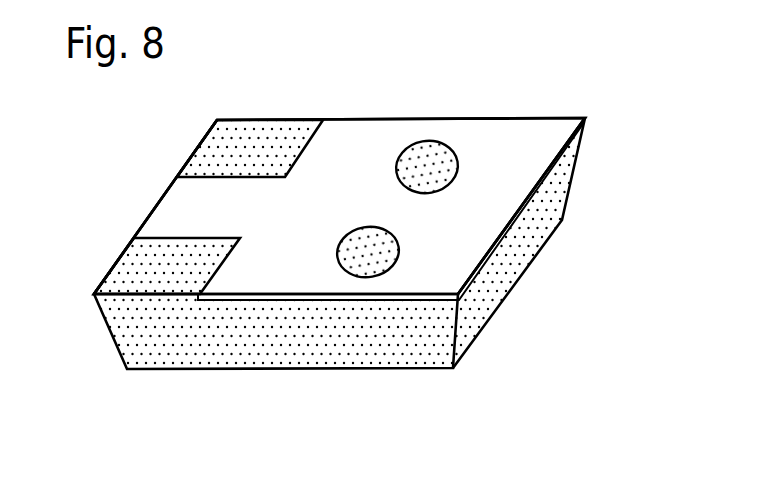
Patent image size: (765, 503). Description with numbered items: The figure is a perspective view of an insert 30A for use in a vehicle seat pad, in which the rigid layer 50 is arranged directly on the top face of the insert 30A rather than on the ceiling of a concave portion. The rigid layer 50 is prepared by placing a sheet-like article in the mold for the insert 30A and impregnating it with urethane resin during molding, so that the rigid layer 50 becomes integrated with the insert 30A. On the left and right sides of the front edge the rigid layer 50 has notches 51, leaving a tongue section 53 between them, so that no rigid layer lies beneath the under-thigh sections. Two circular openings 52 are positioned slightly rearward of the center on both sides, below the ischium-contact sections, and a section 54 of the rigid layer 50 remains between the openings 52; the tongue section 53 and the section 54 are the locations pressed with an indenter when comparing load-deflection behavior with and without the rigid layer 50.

The rigid layer 50 is at (370, 132).
The notch 51 is at (223, 172).
The circular opening 52 is at (405, 165).
The tongue section 53 is at (167, 215).
The section between the openings 54 is at (393, 207).
The insert 30A is at (310, 358).